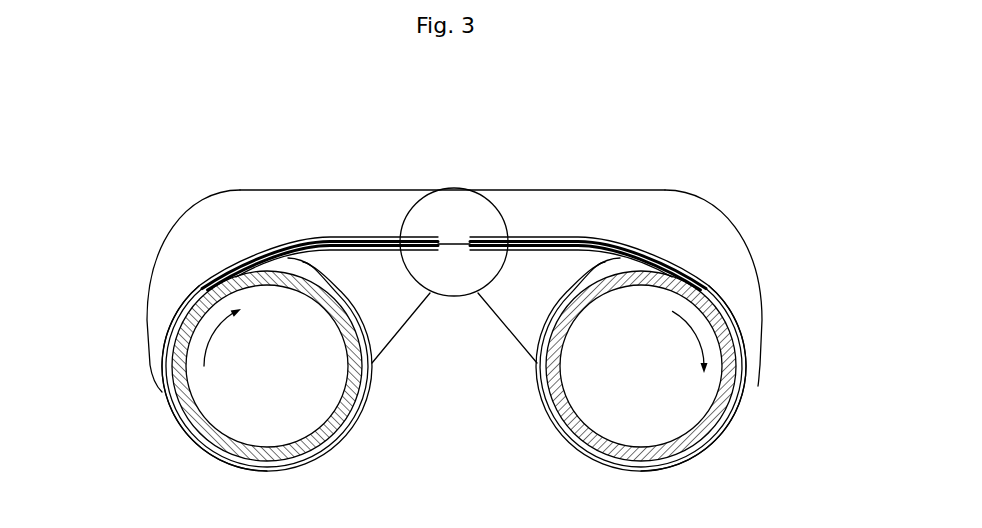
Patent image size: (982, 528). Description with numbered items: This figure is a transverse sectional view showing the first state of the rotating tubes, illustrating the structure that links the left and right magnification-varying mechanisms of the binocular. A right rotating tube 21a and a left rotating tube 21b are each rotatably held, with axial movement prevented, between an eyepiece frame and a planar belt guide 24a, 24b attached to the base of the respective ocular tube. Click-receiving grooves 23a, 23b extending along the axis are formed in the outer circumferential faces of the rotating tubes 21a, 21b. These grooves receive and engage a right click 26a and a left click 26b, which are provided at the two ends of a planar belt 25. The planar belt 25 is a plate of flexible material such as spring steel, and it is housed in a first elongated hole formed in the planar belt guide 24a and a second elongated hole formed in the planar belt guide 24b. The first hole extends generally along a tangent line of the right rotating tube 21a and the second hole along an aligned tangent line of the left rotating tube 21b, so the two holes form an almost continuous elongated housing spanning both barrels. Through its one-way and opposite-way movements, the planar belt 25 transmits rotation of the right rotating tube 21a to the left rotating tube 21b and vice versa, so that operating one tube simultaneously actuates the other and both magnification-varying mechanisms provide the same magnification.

The rotating tube 21a is at (715, 437).
The rotating tube 21b is at (202, 430).
The click-receiving groove 23a is at (743, 385).
The click-receiving groove 23b is at (222, 284).
The planar belt guide 24a is at (577, 235).
The planar belt guide 24b is at (333, 235).
The planar belt 25 is at (455, 240).
The right click 26a is at (732, 370).
The left click 26b is at (205, 274).